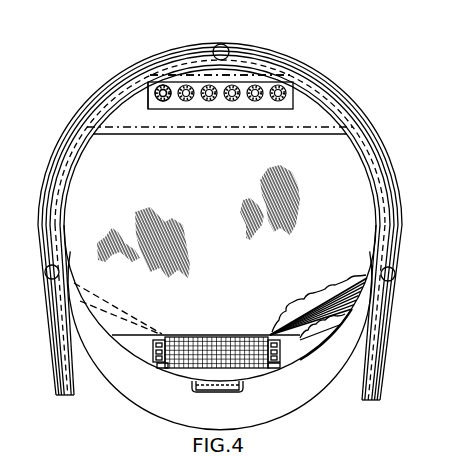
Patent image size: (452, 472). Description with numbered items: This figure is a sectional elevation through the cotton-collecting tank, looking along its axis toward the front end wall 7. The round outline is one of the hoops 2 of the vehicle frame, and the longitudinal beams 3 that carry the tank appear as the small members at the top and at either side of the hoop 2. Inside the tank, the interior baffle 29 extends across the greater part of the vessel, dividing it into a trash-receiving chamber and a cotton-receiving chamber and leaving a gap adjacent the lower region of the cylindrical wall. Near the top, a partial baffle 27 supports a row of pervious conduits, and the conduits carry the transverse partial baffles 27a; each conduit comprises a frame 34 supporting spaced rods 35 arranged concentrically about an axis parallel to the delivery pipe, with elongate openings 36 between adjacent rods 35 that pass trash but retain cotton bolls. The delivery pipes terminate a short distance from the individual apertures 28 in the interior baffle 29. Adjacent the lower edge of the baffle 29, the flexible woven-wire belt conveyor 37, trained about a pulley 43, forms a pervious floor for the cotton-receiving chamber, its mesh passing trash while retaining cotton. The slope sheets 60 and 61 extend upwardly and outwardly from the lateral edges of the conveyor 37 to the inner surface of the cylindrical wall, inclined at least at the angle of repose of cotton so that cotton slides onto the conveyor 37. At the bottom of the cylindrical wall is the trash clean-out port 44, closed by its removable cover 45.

The hoop 2 is at (391, 150).
The longitudinal beam 3 is at (221, 44).
The front end wall 7 is at (297, 337).
The partial baffle 27 is at (300, 93).
The transverse partial baffle 27a is at (242, 73).
The aperture 28 is at (188, 94).
The interior baffle 29 is at (323, 117).
The frame 34 is at (148, 93).
The rod 35 is at (160, 98).
The opening 36 is at (165, 100).
The woven-wire belt conveyor 37 is at (201, 336).
The pulley 43 is at (156, 348).
The trash clean-out port 44 is at (205, 393).
The removable cover 45 is at (235, 393).
The slope sheet 60 is at (312, 313).
The slope sheet 61 is at (114, 301).